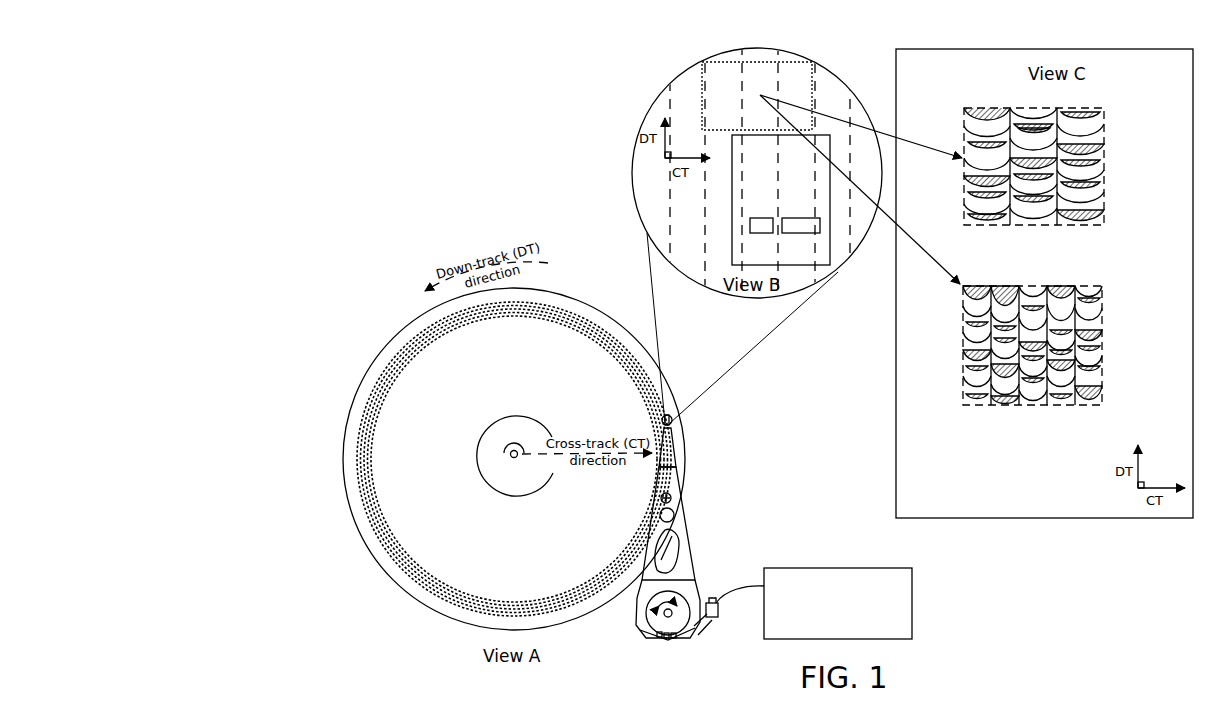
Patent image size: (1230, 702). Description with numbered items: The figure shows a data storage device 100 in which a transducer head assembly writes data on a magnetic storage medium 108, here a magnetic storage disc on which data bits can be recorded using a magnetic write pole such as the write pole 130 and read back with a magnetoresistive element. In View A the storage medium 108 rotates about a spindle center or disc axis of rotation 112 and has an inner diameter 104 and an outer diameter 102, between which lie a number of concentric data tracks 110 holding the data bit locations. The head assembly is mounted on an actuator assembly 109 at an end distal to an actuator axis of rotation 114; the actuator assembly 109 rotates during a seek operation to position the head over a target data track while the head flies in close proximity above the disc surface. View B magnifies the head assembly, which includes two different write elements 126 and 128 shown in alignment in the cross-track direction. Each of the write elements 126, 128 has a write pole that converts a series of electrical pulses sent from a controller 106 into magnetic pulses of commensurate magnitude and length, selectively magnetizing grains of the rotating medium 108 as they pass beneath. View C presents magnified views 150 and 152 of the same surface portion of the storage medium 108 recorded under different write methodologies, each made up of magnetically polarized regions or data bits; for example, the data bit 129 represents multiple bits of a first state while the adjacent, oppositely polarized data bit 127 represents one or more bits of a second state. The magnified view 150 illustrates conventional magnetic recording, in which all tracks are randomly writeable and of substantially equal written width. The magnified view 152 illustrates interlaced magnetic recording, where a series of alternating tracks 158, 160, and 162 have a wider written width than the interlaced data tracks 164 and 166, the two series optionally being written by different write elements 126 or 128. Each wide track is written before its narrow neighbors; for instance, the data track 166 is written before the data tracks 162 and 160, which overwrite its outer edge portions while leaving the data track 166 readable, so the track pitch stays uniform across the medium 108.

The data storage device 100 is at (445, 118).
The outer diameter 102 is at (400, 328).
The inner diameter 104 is at (475, 463).
The controller 106 is at (838, 603).
The magnetic storage medium 108 is at (410, 597).
The actuator assembly 109 is at (688, 535).
The concentric data tracks 110 is at (393, 556).
The disc axis of rotation 112 is at (507, 450).
The actuator axis of rotation 114 is at (664, 616).
The write element 126 is at (756, 233).
The data bit 127 is at (1028, 128).
The write element 128 is at (801, 225).
The data bit 129 is at (1030, 108).
The write pole 130 is at (700, 630).
The magnified view 150 is at (956, 131).
The magnified view 152 is at (962, 345).
The data track 158 is at (978, 411).
The data track 160 is at (1030, 411).
The data track 162 is at (1087, 411).
The interlaced data track 164 is at (1002, 411).
The interlaced data track 166 is at (1060, 411).